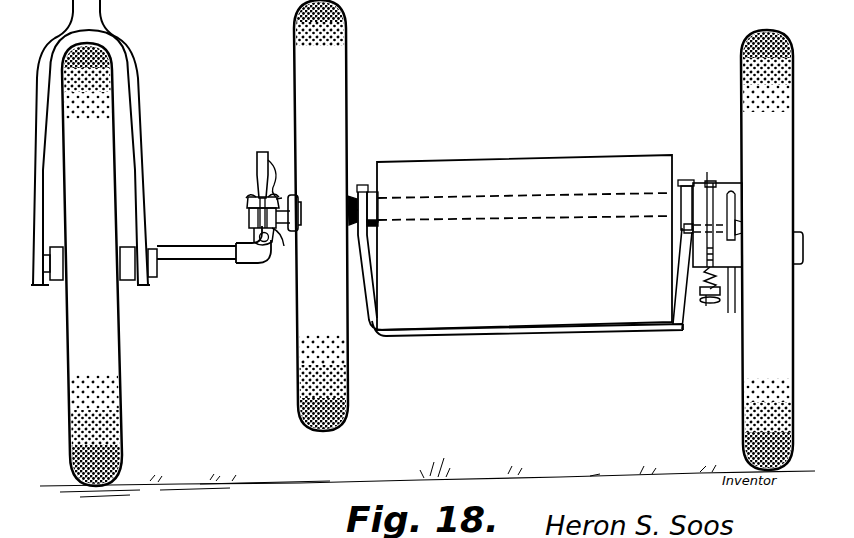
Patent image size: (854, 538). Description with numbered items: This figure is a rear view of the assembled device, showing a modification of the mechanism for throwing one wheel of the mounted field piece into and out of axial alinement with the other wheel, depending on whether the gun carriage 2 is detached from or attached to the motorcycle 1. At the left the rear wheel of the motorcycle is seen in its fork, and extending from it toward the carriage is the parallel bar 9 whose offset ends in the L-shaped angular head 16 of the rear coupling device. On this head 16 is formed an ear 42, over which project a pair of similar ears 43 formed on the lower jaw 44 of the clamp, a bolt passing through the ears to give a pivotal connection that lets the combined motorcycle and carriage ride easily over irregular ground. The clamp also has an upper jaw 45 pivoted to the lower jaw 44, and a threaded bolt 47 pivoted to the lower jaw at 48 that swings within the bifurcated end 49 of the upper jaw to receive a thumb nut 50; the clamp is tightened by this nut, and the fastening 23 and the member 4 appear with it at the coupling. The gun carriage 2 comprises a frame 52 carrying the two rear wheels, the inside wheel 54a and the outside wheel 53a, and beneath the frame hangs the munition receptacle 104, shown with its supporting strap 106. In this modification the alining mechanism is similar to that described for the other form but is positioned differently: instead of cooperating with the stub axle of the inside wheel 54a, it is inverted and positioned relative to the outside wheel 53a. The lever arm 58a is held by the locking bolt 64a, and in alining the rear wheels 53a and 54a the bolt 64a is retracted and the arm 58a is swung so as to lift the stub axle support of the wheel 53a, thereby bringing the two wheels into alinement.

The front fork and wheel 1 is at (96, 243).
The gun carriage 2 is at (252, 104).
The lever 4 is at (257, 162).
The axle rod 9 is at (166, 258).
The L-shaped angular head 16 is at (253, 266).
The nut 23 is at (250, 206).
The ear 42 is at (256, 240).
The ears 43 is at (266, 258).
The lower jaw 44 is at (297, 222).
The upper jaw 45 is at (295, 207).
The threaded bolt 47 is at (270, 180).
The pivot of threaded bolt 48 is at (250, 222).
The bifurcated end 49 is at (270, 199).
The thumb nut 50 is at (254, 200).
The frame 52 is at (488, 195).
The outside wheel 53a is at (741, 40).
The inside wheel 54a is at (385, 54).
The lever arm 58a is at (720, 183).
The locking bolt 64a is at (712, 303).
The munition receptacle 104 is at (590, 270).
The strap 106 is at (667, 331).